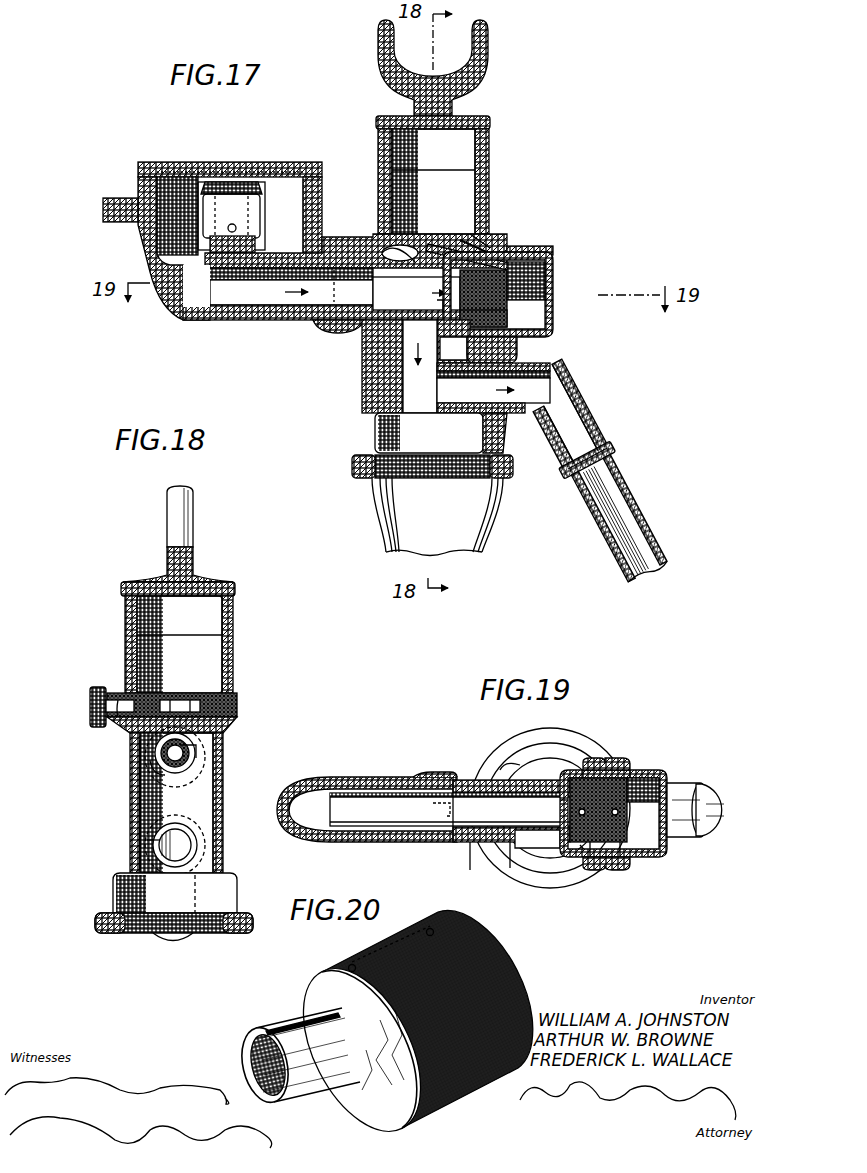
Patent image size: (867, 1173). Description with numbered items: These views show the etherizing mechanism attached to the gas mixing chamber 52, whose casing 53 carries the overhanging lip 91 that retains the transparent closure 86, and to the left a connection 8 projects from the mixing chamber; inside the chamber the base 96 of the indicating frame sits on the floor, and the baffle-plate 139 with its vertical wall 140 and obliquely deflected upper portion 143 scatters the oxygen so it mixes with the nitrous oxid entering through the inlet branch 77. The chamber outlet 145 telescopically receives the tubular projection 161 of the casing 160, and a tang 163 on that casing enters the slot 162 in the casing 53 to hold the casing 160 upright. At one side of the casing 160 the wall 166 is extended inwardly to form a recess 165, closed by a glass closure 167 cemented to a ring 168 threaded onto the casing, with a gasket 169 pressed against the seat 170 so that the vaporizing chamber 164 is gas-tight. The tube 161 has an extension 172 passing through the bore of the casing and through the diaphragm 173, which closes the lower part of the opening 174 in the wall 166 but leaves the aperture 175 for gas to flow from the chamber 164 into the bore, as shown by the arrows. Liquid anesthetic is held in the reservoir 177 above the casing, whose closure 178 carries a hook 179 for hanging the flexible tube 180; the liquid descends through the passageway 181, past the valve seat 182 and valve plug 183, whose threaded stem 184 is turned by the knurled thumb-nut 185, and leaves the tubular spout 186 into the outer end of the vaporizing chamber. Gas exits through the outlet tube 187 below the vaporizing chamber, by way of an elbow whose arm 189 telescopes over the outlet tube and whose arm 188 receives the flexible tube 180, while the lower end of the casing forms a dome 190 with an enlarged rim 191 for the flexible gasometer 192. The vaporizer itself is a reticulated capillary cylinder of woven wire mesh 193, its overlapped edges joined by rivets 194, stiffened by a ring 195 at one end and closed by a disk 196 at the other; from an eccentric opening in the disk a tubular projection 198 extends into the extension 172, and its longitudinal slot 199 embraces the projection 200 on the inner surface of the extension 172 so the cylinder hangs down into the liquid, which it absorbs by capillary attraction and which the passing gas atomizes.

In FIG. 17, the inlet pipe 8 is at (103, 210).
In FIG. 17, the gas mixing chamber 52 is at (305, 196).
In FIG. 17, the casing 53 is at (322, 222).
In FIG. 19, the casing 53 is at (297, 836).
In FIG. 17, the inlet branch 77 is at (255, 245).
In FIG. 17, the closure 86 is at (165, 176).
In FIG. 17, the overhanging lip 91 is at (150, 166).
In FIG. 17, the base 96 is at (194, 286).
In FIG. 17, the baffle-plate 139 is at (266, 192).
In FIG. 17, the vertical wall 140 is at (235, 215).
In FIG. 17, the upper portion 143 is at (226, 182).
In FIG. 17, the outlet 145 is at (226, 320).
In FIG. 19, the outlet 145 is at (365, 777).
In FIG. 17, the casing 160 is at (384, 374).
In FIG. 19, the casing 160 is at (512, 848).
In FIG. 17, the tubular projection 161 is at (265, 320).
In FIG. 19, the tubular projection 161 is at (370, 830).
In FIG. 19, the slot 162 is at (452, 778).
In FIG. 17, the tang 163 is at (332, 332).
In FIG. 17, the chamber 164 is at (500, 248).
In FIG. 17, the recess 165 is at (468, 345).
In FIG. 17, the wall 166 is at (445, 345).
In FIG. 17, the closure 167 is at (553, 268).
In FIG. 19, the closure 167 is at (660, 771).
In FIG. 17, the ring 168 is at (517, 348).
In FIG. 19, the ring 168 is at (627, 762).
In FIG. 17, the gasket 169 is at (490, 232).
In FIG. 19, the gasket 169 is at (640, 862).
In FIG. 17, the seat 170 is at (493, 388).
In FIG. 17, the extension 172 is at (322, 262).
In FIG. 18, the extension 172 is at (203, 770).
In FIG. 19, the extension 172 is at (530, 760).
In FIG. 17, the diaphragm 173 is at (440, 336).
In FIG. 18, the diaphragm 173 is at (197, 757).
In FIG. 19, the diaphragm 173 is at (556, 870).
In FIG. 18, the opening 174 is at (148, 790).
In FIG. 19, the opening 174 is at (596, 870).
In FIG. 17, the aperture 175 is at (448, 244).
In FIG. 17, the reservoir 177 is at (489, 170).
In FIG. 18, the reservoir 177 is at (233, 650).
In FIG. 17, the closure 178 is at (470, 116).
In FIG. 18, the closure 178 is at (222, 584).
In FIG. 17, the cleat or hook 179 is at (488, 68).
In FIG. 18, the cleat or hook 179 is at (172, 520).
In FIG. 17, the flexible tube 180 is at (665, 528).
In FIG. 17, the passageway 181 is at (330, 236).
In FIG. 18, the passageway 181 is at (237, 700).
In FIG. 18, the valve seat 182 is at (237, 718).
In FIG. 18, the valve plug 183 is at (200, 700).
In FIG. 17, the stem 184 is at (430, 245).
In FIG. 18, the stem 184 is at (118, 700).
In FIG. 18, the knurled thumb-nut 185 is at (90, 705).
In FIG. 17, the tubular spout 186 is at (525, 250).
In FIG. 18, the tubular spout 186 is at (130, 745).
In FIG. 17, the outlet tube 187 is at (503, 413).
In FIG. 18, the outlet tube 187 is at (155, 830).
In FIG. 17, the arm 188 is at (612, 440).
In FIG. 18, the arm 188 is at (172, 940).
In FIG. 19, the arm 188 is at (716, 783).
In FIG. 17, the arm 189 is at (457, 413).
In FIG. 18, the arm 189 is at (198, 838).
In FIG. 17, the dome 190 is at (368, 455).
In FIG. 18, the dome 190 is at (113, 890).
In FIG. 19, the dome 190 is at (555, 755).
In FIG. 17, the enlarged rim 191 is at (352, 466).
In FIG. 18, the enlarged rim 191 is at (95, 923).
In FIG. 19, the enlarged rim 191 is at (592, 762).
In FIG. 17, the flexible gasometer 192 is at (374, 520).
In FIG. 17, the wire mesh 193 is at (503, 318).
In FIG. 19, the wire mesh 193 is at (600, 868).
In FIG. 20, the wire mesh 193 is at (466, 1092).
In FIG. 19, the rivets 194 is at (620, 812).
In FIG. 20, the rivets 194 is at (350, 966).
In FIG. 17, the stiffening ring 195 is at (503, 290).
In FIG. 19, the stiffening ring 195 is at (622, 822).
In FIG. 20, the stiffening ring 195 is at (505, 1000).
In FIG. 17, the disk 196 is at (540, 292).
In FIG. 19, the disk 196 is at (586, 760).
In FIG. 20, the disk 196 is at (350, 1110).
In FIG. 18, the tubular projection 198 is at (162, 758).
In FIG. 20, the tubular projection 198 is at (275, 1025).
In FIG. 18, the longitudinal slot 199 is at (200, 748).
In FIG. 19, the longitudinal slot 199 is at (520, 777).
In FIG. 20, the longitudinal slot 199 is at (295, 1012).
In FIG. 17, the projection 200 is at (430, 293).
In FIG. 19, the projection 200 is at (536, 860).